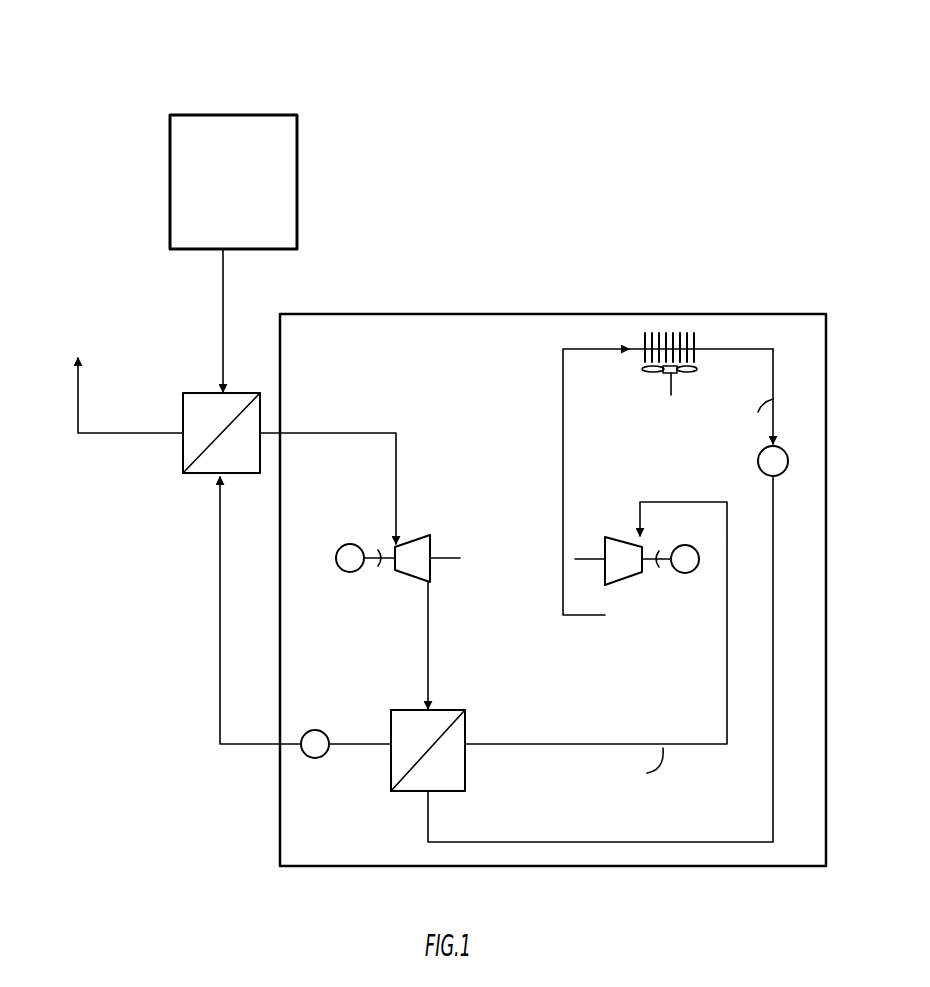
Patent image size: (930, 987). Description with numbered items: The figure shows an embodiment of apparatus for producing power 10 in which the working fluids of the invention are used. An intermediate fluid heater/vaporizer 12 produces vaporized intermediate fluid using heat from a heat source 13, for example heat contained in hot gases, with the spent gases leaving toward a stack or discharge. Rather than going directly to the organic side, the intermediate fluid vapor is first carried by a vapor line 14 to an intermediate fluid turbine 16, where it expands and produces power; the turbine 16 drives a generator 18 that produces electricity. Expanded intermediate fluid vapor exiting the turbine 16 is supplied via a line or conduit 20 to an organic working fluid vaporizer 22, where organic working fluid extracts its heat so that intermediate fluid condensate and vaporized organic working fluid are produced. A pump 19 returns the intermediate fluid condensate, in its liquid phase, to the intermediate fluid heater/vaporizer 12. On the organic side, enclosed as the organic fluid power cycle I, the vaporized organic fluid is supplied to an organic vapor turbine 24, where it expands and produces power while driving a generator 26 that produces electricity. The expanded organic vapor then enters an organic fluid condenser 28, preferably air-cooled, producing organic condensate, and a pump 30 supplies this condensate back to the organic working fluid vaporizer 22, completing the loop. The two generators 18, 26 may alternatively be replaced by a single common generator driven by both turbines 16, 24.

The apparatus for producing power 10 is at (160, 52).
The intermediate fluid heater/vaporizer 12 is at (203, 392).
The heat source 13 is at (248, 251).
The intermediate fluid vapor line 14 is at (396, 463).
The intermediate fluid turbine 16 is at (418, 537).
The generator 18 is at (345, 573).
The pump 19 is at (316, 730).
The line or conduit 20 is at (428, 644).
The organic working fluid vaporizer 22 is at (465, 730).
The organic vapor turbine 24 is at (621, 537).
The generator 26 is at (682, 573).
The organic fluid condenser 28 is at (691, 352).
The pump 30 is at (788, 456).
The organic fluid power cycle I is at (638, 820).